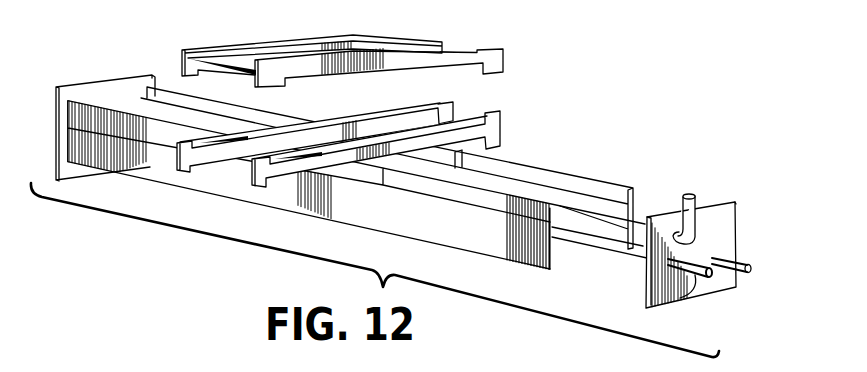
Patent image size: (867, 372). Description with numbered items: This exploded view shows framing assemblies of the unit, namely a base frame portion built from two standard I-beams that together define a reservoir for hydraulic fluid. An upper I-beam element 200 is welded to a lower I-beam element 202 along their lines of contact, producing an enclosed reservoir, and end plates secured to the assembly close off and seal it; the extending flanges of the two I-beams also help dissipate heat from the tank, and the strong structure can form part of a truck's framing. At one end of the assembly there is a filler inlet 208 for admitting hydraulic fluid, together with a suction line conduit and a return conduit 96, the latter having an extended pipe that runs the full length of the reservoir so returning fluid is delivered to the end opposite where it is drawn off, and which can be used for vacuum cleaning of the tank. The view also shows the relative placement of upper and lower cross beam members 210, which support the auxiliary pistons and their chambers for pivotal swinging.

The upper I-beam element 200 is at (600, 182).
The lower I-beam element 202 is at (516, 262).
The filler inlet 208 is at (693, 200).
The cross beam members 210 is at (477, 60).
The return conduit 96 is at (680, 298).